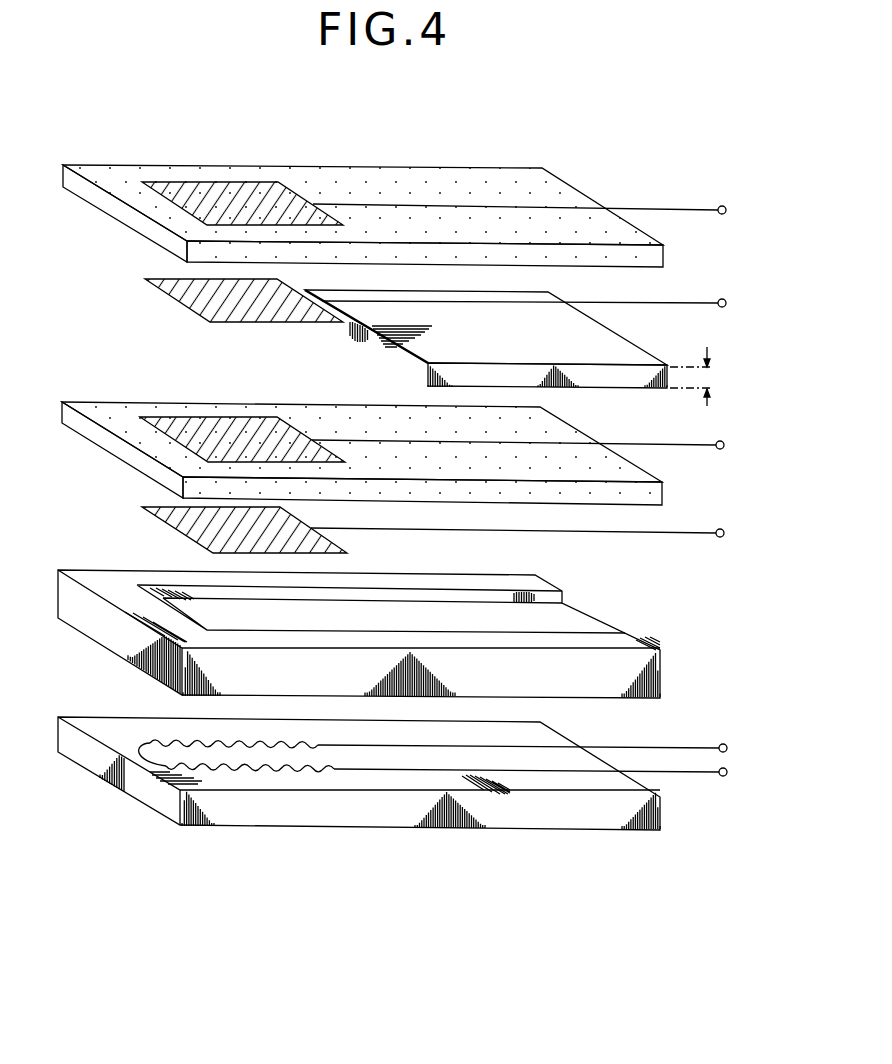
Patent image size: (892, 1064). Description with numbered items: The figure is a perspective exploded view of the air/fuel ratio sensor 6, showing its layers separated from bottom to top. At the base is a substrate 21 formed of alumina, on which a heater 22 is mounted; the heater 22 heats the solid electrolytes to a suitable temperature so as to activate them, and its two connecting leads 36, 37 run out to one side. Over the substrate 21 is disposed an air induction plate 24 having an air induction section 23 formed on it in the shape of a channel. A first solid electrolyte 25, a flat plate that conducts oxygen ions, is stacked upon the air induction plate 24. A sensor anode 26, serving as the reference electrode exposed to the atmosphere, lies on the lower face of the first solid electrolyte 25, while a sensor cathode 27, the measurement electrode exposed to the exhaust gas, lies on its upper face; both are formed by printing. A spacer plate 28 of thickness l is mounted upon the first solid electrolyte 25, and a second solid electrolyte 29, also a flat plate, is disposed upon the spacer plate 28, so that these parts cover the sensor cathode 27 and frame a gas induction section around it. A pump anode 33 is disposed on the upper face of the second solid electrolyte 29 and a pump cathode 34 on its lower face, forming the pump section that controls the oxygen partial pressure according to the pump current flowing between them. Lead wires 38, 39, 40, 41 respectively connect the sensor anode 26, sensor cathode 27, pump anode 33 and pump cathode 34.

The air/fuel ratio sensor 6 is at (392, 511).
The substrate 21 is at (135, 798).
The heater 22 is at (178, 741).
The air induction section 23 is at (230, 625).
The air induction plate 24 is at (359, 634).
The first solid electrolyte 25 is at (122, 452).
The sensor anode 26 is at (183, 537).
The sensor cathode 27 is at (222, 423).
The spacer plate 28 is at (486, 339).
The second solid electrolyte 29 is at (122, 218).
The pump anode 33 is at (224, 183).
The pump cathode 34 is at (188, 311).
The connecting lead of heater 36 is at (695, 747).
The connecting lead of heater 37 is at (696, 774).
The lead wire of sensor anode 38 is at (700, 532).
The lead wire of sensor cathode 39 is at (697, 444).
The lead wire of pump anode 40 is at (679, 210).
The lead wire of pump cathode 41 is at (687, 304).